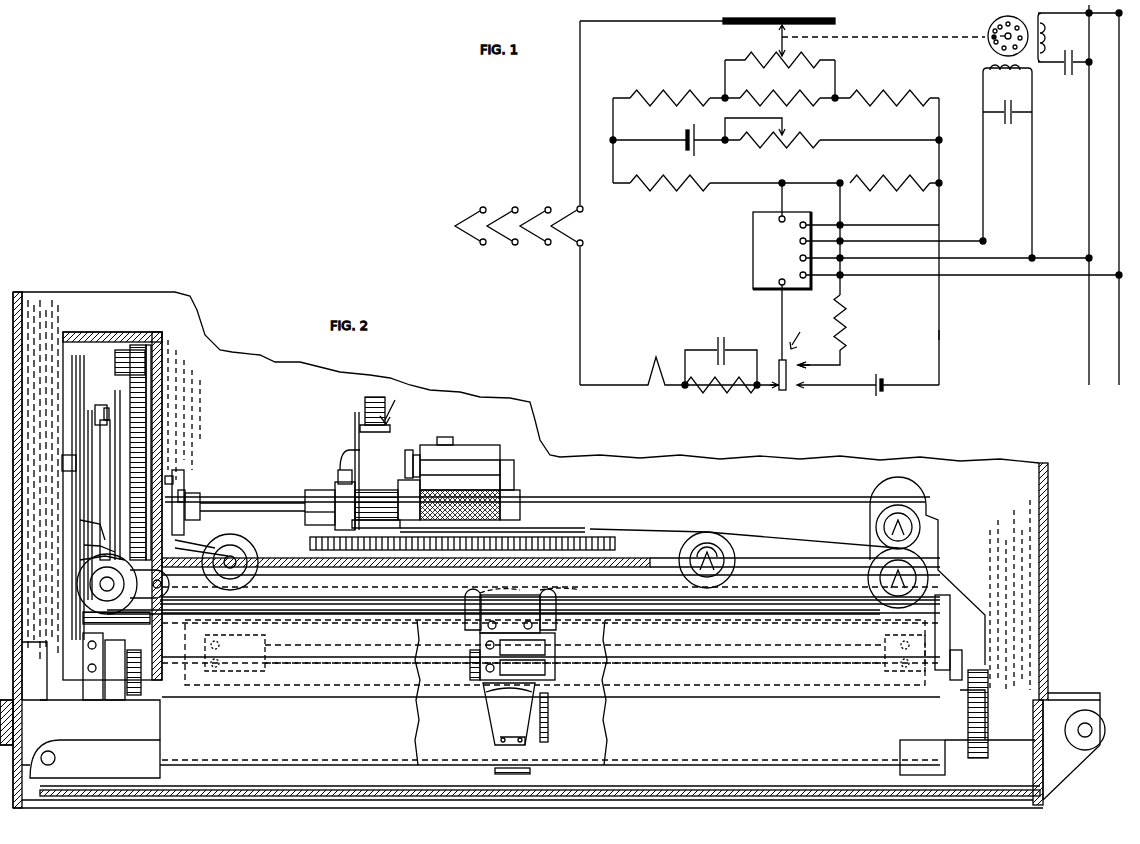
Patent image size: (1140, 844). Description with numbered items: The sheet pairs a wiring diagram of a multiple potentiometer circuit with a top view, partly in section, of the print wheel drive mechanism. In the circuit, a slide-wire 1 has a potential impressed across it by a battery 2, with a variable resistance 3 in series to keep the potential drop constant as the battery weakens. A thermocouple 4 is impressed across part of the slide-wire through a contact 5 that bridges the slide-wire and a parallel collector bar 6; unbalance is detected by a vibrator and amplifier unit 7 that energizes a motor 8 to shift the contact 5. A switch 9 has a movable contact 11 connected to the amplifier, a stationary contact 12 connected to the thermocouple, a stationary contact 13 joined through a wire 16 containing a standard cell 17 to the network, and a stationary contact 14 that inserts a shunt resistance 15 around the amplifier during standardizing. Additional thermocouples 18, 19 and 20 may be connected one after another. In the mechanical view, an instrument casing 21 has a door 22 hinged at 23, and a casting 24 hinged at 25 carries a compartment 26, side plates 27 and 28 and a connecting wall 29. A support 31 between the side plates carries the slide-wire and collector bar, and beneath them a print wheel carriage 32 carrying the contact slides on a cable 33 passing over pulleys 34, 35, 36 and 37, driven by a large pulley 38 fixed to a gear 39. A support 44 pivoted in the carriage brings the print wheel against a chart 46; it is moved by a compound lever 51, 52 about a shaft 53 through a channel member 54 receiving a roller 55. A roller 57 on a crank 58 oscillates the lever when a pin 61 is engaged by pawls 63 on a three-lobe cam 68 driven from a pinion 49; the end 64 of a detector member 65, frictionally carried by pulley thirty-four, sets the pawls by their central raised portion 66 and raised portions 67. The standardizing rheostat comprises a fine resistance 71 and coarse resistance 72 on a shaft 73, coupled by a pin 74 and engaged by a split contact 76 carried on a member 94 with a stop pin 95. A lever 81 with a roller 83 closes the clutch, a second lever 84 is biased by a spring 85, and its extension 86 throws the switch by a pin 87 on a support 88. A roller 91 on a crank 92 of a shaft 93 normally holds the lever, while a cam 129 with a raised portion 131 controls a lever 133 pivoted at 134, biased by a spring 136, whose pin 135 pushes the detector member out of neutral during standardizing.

In FIG. 1, the slide-wire 1 is at (762, 56).
In FIG. 2, the slide-wire 1 is at (292, 676).
In FIG. 1, the battery 2 is at (685, 130).
In FIG. 1, the variable resistance 3 is at (784, 138).
In FIG. 1, the thermocouple 4 is at (573, 214).
In FIG. 1, the contact 5 is at (785, 43).
In FIG. 2, the contact 5 is at (552, 676).
In FIG. 1, the collector bar 6 is at (735, 24).
In FIG. 2, the collector bar 6 is at (316, 676).
In FIG. 1, the vibrator and amplifier unit 7 is at (752, 266).
In FIG. 1, the motor 8 is at (988, 48).
In FIG. 1, the switch 9 is at (798, 334).
In FIG. 2, the switch 9 is at (388, 412).
In FIG. 1, the movable contact 11 is at (782, 391).
In FIG. 1, the stationary contact 12 is at (774, 388).
In FIG. 1, the stationary contact 13 is at (800, 390).
In FIG. 1, the stationary contact 14 is at (800, 362).
In FIG. 1, the shunt resistance 15 is at (845, 330).
In FIG. 1, the wire 16 is at (941, 336).
In FIG. 1, the standard cell 17 is at (885, 378).
In FIG. 1, the thermocouple 18 is at (539, 214).
In FIG. 1, the thermocouple 19 is at (505, 214).
In FIG. 1, the thermocouple 20 is at (472, 212).
In FIG. 2, the instrument casing 21 is at (1046, 544).
In FIG. 2, the door 22 is at (240, 800).
In FIG. 2, the hinge 23 is at (1092, 737).
In FIG. 2, the casting 24 is at (814, 526).
In FIG. 2, the hinge 25 is at (56, 757).
In FIG. 2, the compartment 26 is at (84, 336).
In FIG. 2, the side plate 27 is at (162, 426).
In FIG. 2, the side plate 28 is at (950, 630).
In FIG. 2, the connecting wall 29 is at (636, 556).
In FIG. 2, the support 31 is at (392, 686).
In FIG. 2, the print wheel carriage 32 is at (498, 712).
In FIG. 2, the cable 33 is at (746, 532).
In FIG. 2, the pulley 34 is at (95, 578).
In FIG. 2, the pulley 35 is at (232, 546).
In FIG. 2, the pulley 36 is at (736, 550).
In FIG. 2, the pulley 37 is at (920, 566).
In FIG. 2, the large pulley 38 is at (552, 532).
In FIG. 2, the gear 39 is at (598, 538).
In FIG. 2, the support 44 is at (550, 706).
In FIG. 2, the chart 46 is at (440, 748).
In FIG. 2, the pinion 49 is at (115, 360).
In FIG. 2, the lever 51 is at (78, 498).
In FIG. 2, the lever portion 52 is at (106, 640).
In FIG. 2, the shaft 53 is at (56, 660).
In FIG. 2, the channel member 54 is at (356, 608).
In FIG. 2, the roller 55 is at (572, 592).
In FIG. 2, the roller 57 is at (64, 462).
In FIG. 2, the crank 58 is at (72, 430).
In FIG. 2, the pin 61 is at (90, 505).
In FIG. 2, the pawls 63 is at (100, 410).
In FIG. 2, the end 64 is at (80, 520).
In FIG. 2, the detector member 65 is at (80, 560).
In FIG. 2, the central raised portion 66 is at (106, 408).
In FIG. 2, the raised portions 67 is at (100, 406).
In FIG. 2, the cam 68 is at (148, 392).
In FIG. 2, the fine resistance 71 is at (496, 470).
In FIG. 2, the coarse resistance 72 is at (498, 468).
In FIG. 2, the shaft 73 is at (446, 436).
In FIG. 2, the pin 74 is at (410, 450).
In FIG. 2, the split contact 76 is at (520, 490).
In FIG. 2, the lever 81 is at (404, 482).
In FIG. 2, the roller 83 is at (432, 604).
In FIG. 2, the second lever 84 is at (338, 474).
In FIG. 2, the spring 85 is at (384, 490).
In FIG. 2, the extension 86 is at (354, 446).
In FIG. 2, the pin 87 is at (364, 408).
In FIG. 2, the support 88 is at (340, 460).
In FIG. 2, the roller 91 is at (338, 524).
In FIG. 2, the crank 92 is at (336, 490).
In FIG. 2, the shaft 93 is at (278, 500).
In FIG. 2, the member 94 is at (472, 448).
In FIG. 2, the pin 95 is at (418, 454).
In FIG. 2, the cam 129 is at (186, 492).
In FIG. 2, the raised portion 131 is at (182, 474).
In FIG. 2, the lever 133 is at (196, 542).
In FIG. 2, the pivot 134 is at (172, 478).
In FIG. 2, the pin 135 is at (84, 545).
In FIG. 2, the spring 136 is at (200, 500).